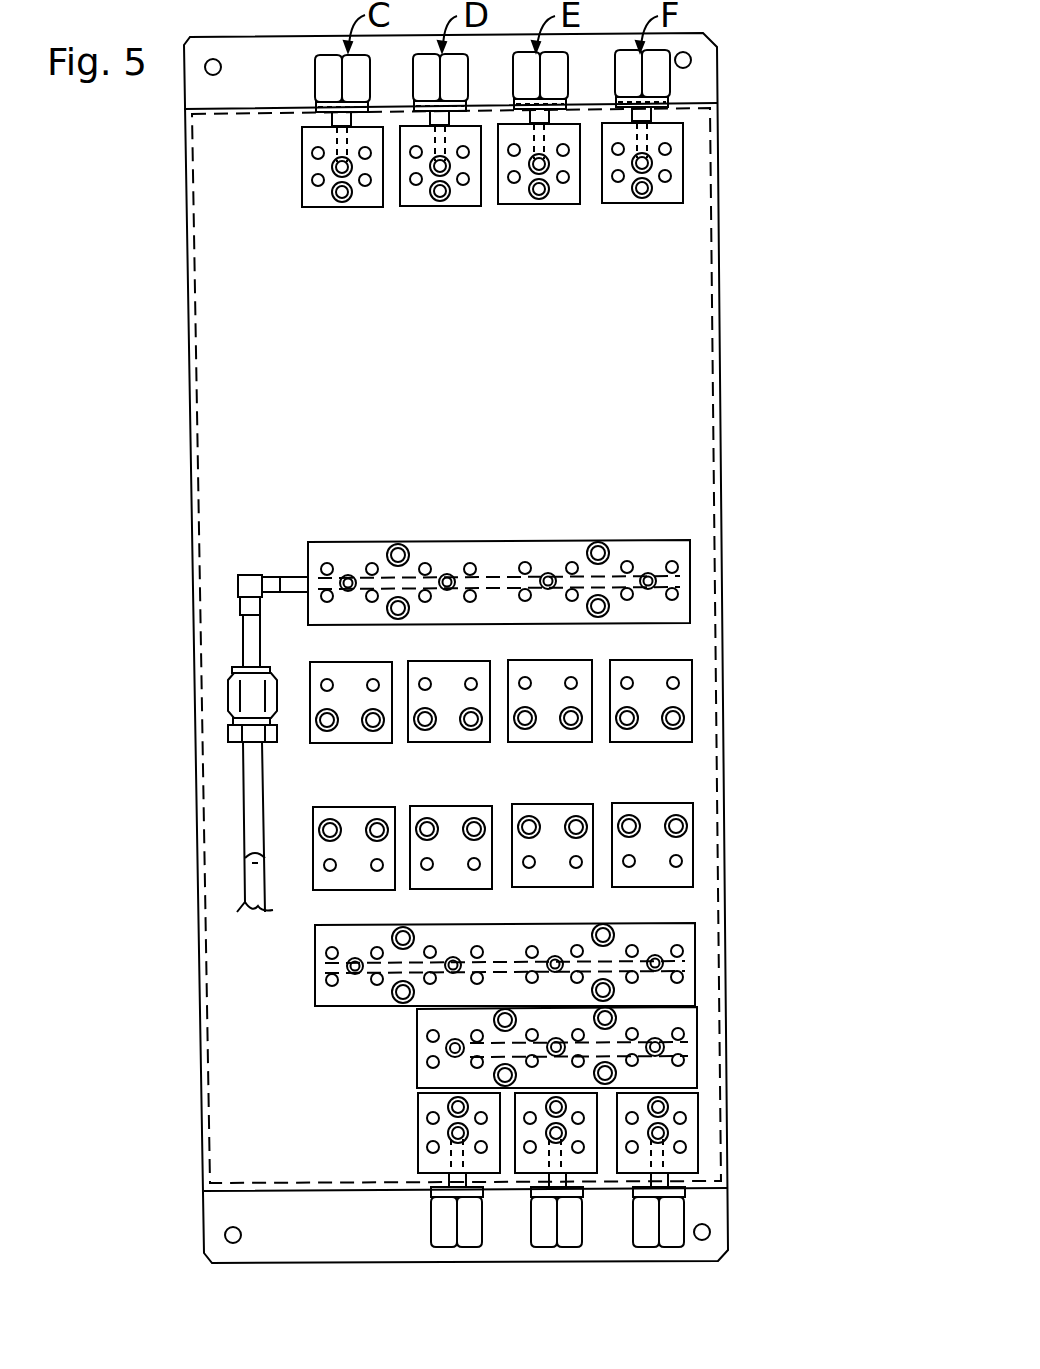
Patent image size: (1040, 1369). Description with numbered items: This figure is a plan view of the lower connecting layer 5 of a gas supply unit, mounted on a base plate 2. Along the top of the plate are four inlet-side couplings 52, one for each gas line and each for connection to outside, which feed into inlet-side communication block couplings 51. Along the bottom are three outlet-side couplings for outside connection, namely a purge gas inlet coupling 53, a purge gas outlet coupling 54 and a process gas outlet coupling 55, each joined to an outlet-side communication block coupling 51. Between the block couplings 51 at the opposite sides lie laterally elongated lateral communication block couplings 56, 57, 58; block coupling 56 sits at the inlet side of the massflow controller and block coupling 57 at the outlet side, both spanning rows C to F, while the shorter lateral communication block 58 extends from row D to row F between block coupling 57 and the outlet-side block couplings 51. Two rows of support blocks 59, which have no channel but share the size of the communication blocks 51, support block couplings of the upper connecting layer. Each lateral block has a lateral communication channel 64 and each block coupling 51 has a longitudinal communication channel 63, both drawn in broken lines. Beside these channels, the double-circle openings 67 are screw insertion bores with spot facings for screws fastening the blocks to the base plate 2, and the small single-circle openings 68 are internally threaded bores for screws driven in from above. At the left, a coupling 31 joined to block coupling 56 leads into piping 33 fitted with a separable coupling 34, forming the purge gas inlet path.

The base plate 2 is at (213, 1001).
The lower connecting layer 5 is at (735, 413).
The coupling 31 is at (287, 580).
The piping 33 is at (240, 696).
The separable coupling 34 is at (245, 797).
The communication block coupling 51 is at (308, 172).
The inlet-side coupling 52 is at (323, 60).
The purge gas inlet coupling 53 is at (446, 1230).
The purge gas outlet coupling 54 is at (550, 1232).
The process gas outlet coupling 55 is at (650, 1232).
The lateral communication block coupling 56 is at (683, 580).
The lateral communication block coupling 57 is at (688, 957).
The lateral communication block 58 is at (692, 1050).
The support block 59 is at (683, 686).
The longitudinal communication channel 63 is at (335, 128).
The lateral communication channel 64 is at (496, 578).
The screw insertion bore 67 is at (344, 197).
The internally threaded bore 68 is at (318, 183).